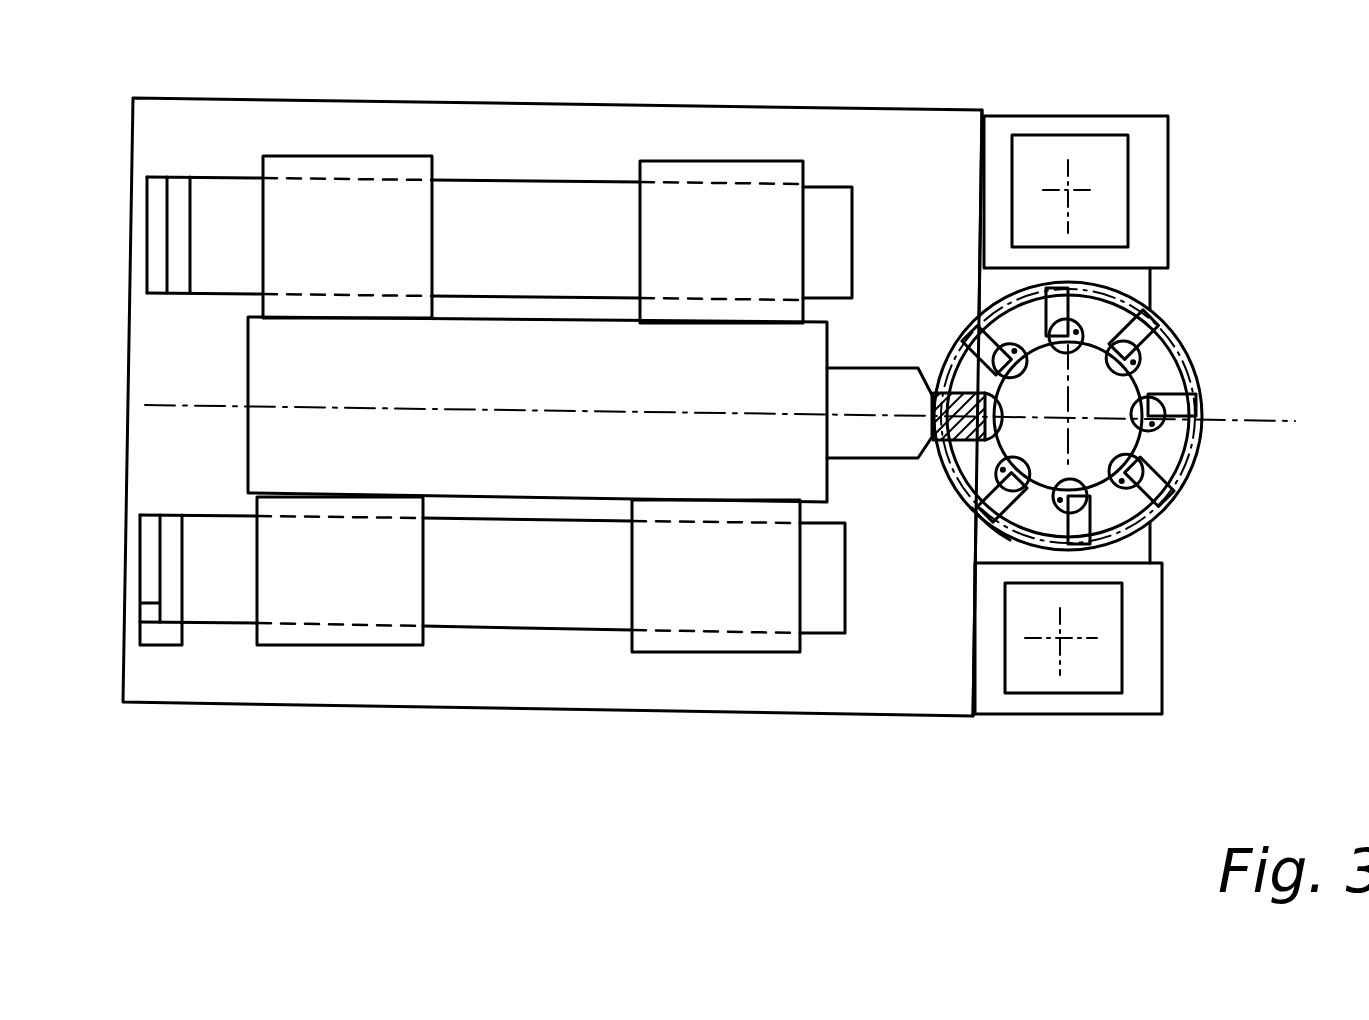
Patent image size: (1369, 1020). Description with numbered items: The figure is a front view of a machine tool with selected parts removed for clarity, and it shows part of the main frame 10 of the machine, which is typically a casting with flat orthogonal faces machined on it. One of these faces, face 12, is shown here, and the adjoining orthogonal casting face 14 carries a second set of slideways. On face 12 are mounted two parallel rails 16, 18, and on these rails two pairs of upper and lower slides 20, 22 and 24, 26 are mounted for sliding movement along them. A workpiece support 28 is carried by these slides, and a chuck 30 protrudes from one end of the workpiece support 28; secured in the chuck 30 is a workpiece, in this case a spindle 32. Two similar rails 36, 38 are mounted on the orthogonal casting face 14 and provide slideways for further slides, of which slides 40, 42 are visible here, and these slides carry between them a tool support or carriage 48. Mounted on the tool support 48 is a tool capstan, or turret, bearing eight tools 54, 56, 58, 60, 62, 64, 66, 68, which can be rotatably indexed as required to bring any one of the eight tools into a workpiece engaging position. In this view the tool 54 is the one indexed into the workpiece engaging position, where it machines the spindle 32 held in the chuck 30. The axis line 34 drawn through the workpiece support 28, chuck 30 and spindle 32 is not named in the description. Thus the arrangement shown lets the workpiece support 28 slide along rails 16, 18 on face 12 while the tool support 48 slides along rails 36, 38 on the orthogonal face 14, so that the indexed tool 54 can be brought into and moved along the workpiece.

The main frame 10 is at (552, 360).
The casting face 12 is at (540, 160).
The adjoining orthogonal casting face 14 is at (987, 152).
The rail 16 is at (547, 256).
The rail 18 is at (543, 598).
The upper slide 20 is at (356, 244).
The lower slide 22 is at (358, 596).
The upper slide 24 is at (736, 252).
The lower slide 26 is at (727, 597).
The workpiece support 28 is at (555, 385).
The chuck 30 is at (880, 367).
The spindle (workpiece) 32 is at (940, 448).
The center axis 34 is at (190, 405).
The rail 36 is at (1115, 179).
The rail 38 is at (1107, 635).
The slide 40 is at (1119, 192).
The slide 42 is at (1122, 638).
The tool support 48 is at (1095, 402).
The tool 54 is at (1002, 442).
The tool 56 is at (1016, 378).
The tool 58 is at (1068, 353).
The tool 60 is at (1168, 370).
The tool 62 is at (1200, 390).
The tool 64 is at (1173, 461).
The tool 66 is at (1147, 533).
The tool 68 is at (972, 508).